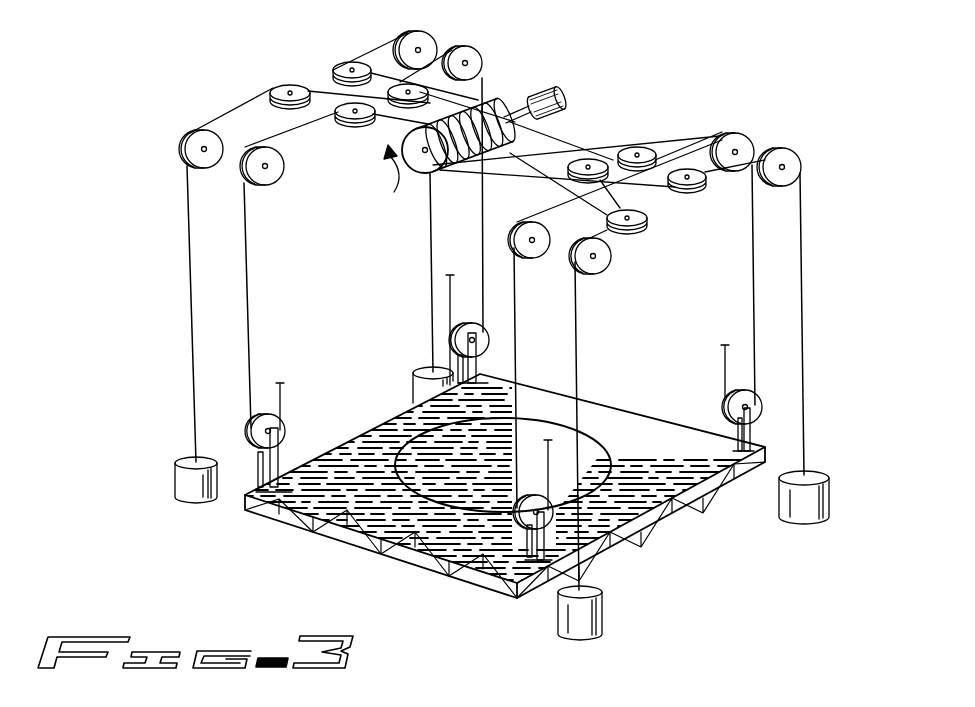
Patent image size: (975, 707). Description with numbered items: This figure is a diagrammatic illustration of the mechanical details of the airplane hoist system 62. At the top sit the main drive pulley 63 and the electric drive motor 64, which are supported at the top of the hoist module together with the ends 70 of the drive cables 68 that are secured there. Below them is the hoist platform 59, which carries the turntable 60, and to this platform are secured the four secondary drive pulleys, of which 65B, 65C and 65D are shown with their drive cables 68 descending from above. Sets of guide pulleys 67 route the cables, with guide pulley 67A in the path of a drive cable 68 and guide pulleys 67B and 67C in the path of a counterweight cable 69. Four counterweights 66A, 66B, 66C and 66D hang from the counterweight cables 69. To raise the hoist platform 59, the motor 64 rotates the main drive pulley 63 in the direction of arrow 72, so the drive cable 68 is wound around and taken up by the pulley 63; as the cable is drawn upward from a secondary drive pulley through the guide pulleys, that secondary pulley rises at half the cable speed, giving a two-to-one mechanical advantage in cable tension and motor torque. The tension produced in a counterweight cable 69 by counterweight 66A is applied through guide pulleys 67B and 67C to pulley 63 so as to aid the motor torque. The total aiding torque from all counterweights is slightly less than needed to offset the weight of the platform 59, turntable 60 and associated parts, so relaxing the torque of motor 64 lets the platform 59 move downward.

The hoist platform 59 is at (677, 514).
The turntable 60 is at (484, 477).
The hoist system 62 is at (658, 100).
The main drive pulley 63 is at (492, 100).
The electric drive motor 64 is at (548, 88).
The secondary drive pulley 65B is at (730, 396).
The secondary drive pulley 65C is at (454, 350).
The secondary drive pulley 65D is at (283, 430).
The counterweight 66A is at (605, 608).
The counterweight 66B is at (830, 505).
The counterweight 66C is at (413, 392).
The counterweight 66D is at (176, 470).
The guide pulleys 67 is at (268, 178).
The guide pulley 67A is at (607, 178).
The guide pulley 67B is at (596, 275).
The guide pulley 67C is at (632, 228).
The drive cables 68 is at (482, 222).
The counterweight cables 69 is at (190, 300).
The ends of drive cables 70 is at (450, 285).
The arrow 72 is at (394, 192).